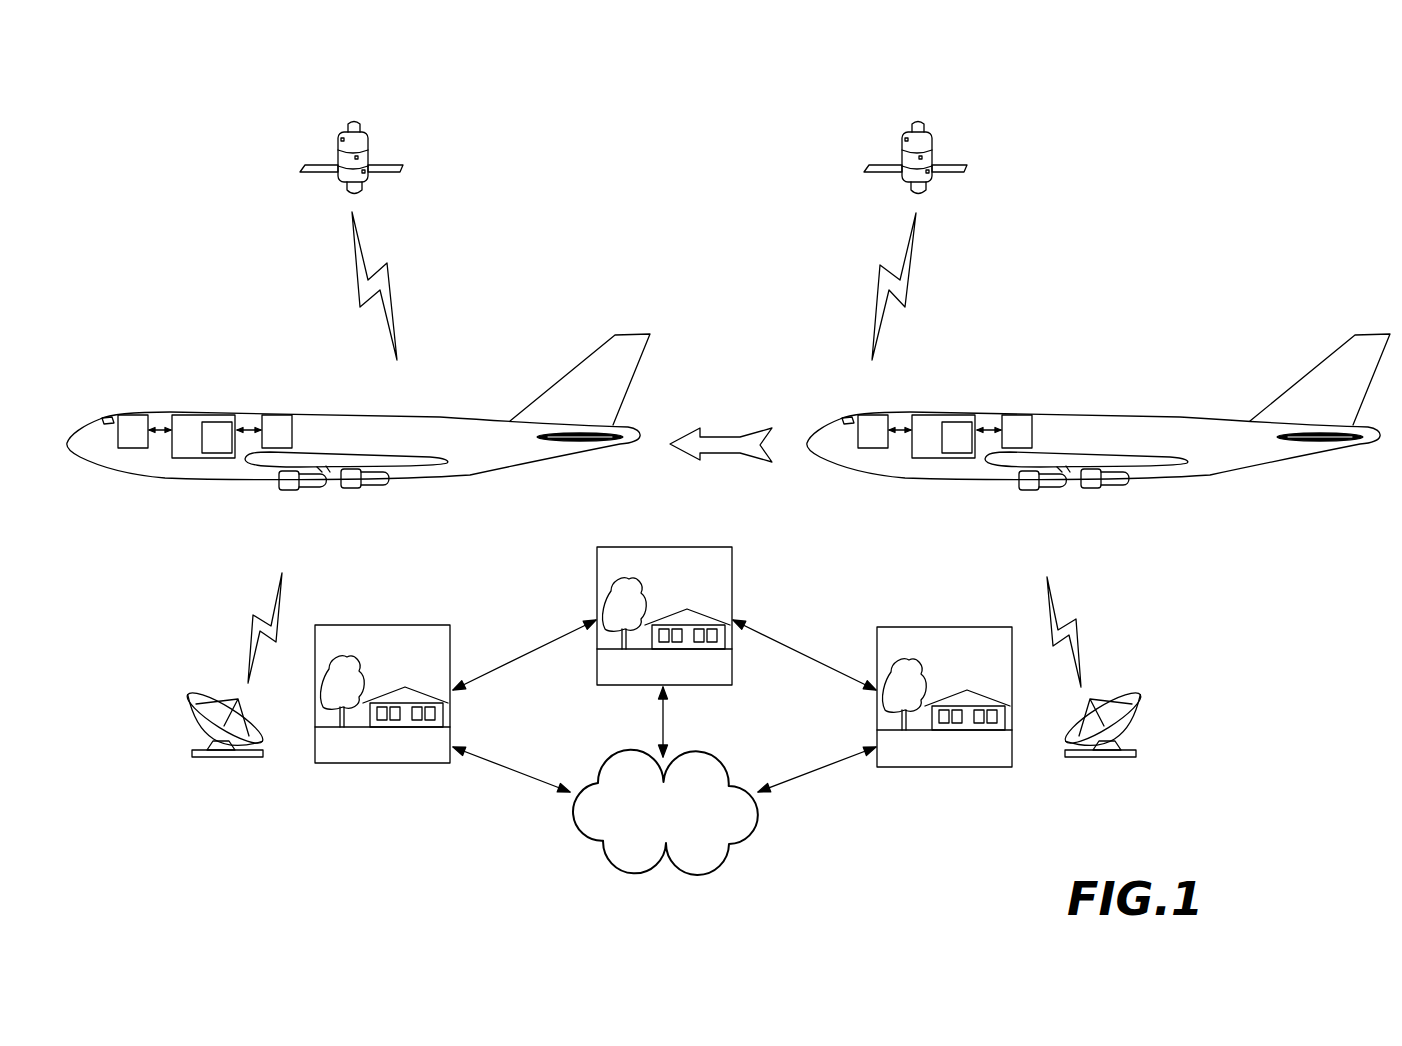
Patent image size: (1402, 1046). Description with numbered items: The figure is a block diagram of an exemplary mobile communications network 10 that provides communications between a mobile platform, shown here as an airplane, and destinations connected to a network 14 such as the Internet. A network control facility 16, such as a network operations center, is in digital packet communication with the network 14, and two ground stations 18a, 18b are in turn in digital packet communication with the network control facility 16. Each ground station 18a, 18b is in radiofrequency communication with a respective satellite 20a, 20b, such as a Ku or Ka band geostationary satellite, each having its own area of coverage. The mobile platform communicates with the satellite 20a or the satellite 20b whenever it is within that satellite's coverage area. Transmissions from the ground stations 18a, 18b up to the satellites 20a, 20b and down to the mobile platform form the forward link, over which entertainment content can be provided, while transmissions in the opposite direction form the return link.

The mobile communications network 10 is at (1155, 181).
The network 14 is at (607, 860).
The network control facility 16 is at (597, 572).
The ground station 18a is at (942, 767).
The ground station 18b is at (383, 763).
The satellite 20a is at (932, 141).
The satellite 20b is at (368, 141).